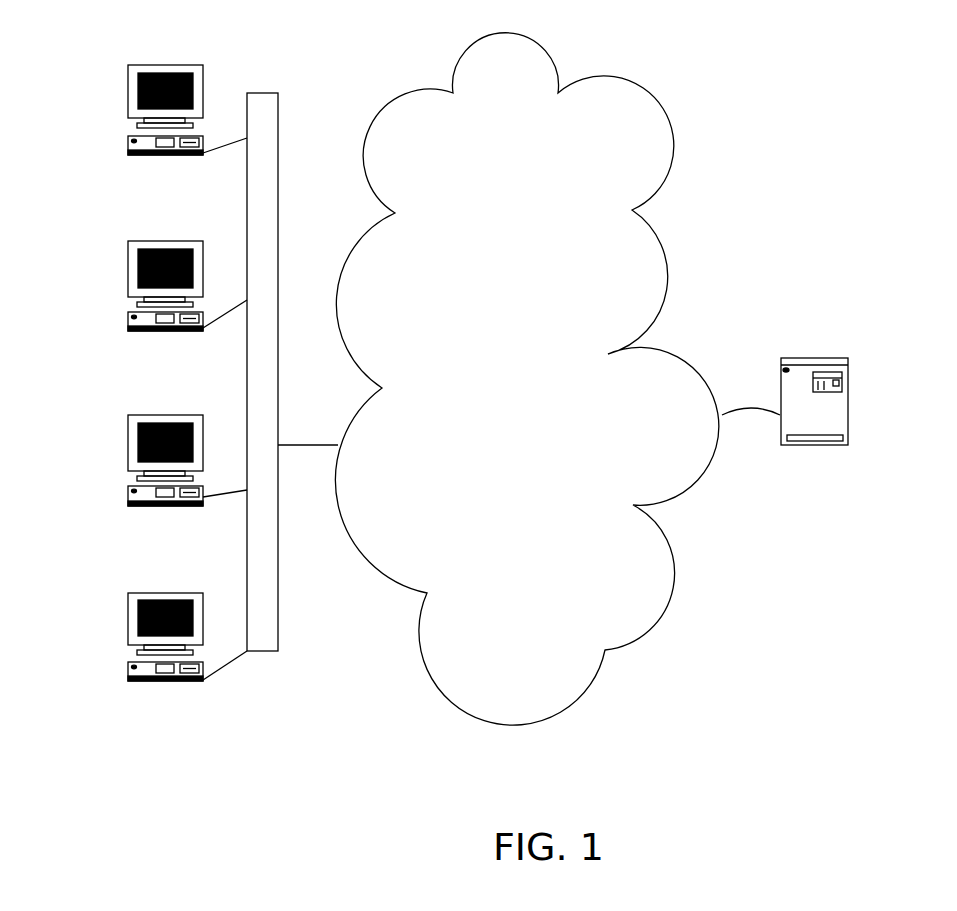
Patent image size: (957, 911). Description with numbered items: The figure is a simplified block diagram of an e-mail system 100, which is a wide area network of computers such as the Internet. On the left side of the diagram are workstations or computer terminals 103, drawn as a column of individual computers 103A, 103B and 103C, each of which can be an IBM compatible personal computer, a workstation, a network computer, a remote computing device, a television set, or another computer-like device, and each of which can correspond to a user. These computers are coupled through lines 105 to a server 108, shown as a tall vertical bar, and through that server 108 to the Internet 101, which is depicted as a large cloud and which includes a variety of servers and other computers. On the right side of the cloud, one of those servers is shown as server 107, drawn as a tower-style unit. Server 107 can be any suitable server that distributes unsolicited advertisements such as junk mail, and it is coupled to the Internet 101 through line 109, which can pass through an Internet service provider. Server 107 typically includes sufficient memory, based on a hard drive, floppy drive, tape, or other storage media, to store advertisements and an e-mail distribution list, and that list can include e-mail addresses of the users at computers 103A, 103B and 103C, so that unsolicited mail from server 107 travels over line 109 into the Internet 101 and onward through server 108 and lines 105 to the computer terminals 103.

The e-mail system 100 is at (728, 93).
The Internet 101 is at (648, 285).
The computer terminals 103 is at (128, 106).
The computer 103A is at (128, 284).
The computer 103B is at (128, 456).
The computer 103C is at (128, 637).
The lines 105 is at (232, 142).
The server 107 is at (815, 445).
The server 108 is at (278, 100).
The line 109 is at (750, 408).